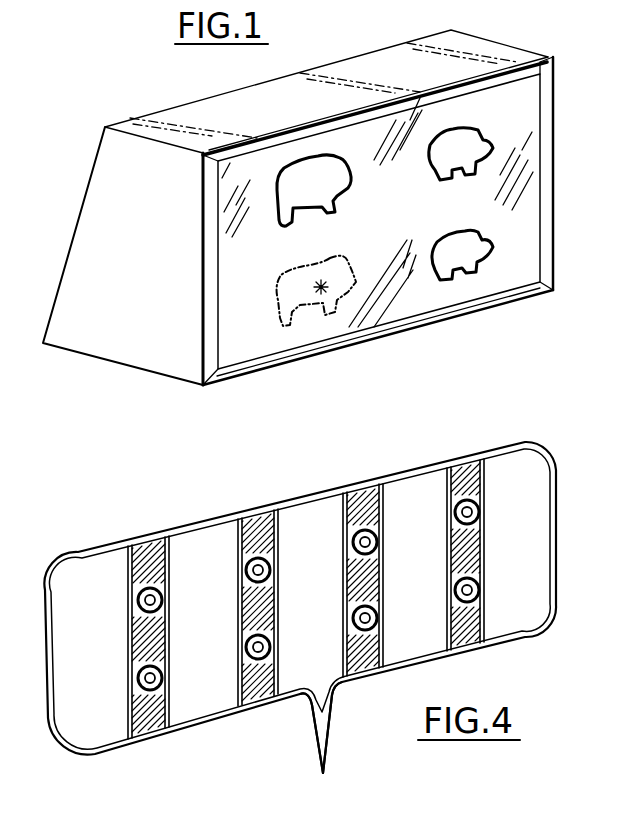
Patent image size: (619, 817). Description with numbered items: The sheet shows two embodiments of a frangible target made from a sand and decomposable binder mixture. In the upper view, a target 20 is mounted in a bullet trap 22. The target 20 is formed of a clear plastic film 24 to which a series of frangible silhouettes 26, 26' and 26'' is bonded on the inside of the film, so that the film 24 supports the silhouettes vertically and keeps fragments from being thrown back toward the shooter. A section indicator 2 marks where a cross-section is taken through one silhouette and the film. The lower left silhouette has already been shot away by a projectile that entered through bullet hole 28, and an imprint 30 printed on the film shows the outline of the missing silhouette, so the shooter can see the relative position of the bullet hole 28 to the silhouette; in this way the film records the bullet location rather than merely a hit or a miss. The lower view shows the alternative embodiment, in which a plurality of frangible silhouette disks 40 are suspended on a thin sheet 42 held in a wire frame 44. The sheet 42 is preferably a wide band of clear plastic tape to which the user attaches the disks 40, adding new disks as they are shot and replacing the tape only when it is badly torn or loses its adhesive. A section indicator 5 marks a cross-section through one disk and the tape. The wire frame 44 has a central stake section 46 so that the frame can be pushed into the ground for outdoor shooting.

In FIG. 1, the target 20 is at (522, 101).
In FIG. 1, the bullet trap 22 is at (480, 36).
In FIG. 1, the clear plastic film 24 is at (516, 277).
In FIG. 1, the frangible silhouette 26 is at (306, 161).
In FIG. 1, the frangible silhouette 26' is at (515, 141).
In FIG. 1, the frangible silhouette 26'' is at (519, 234).
In FIG. 1, the bullet hole 28 is at (320, 300).
In FIG. 1, the imprint 30 is at (280, 327).
In FIG. 1, the section line 2- 2 is at (307, 235).
In FIG. 4, the frangible silhouette disk 40 is at (161, 597).
In FIG. 4, the thin sheet 42 is at (471, 453).
In FIG. 4, the wire frame 44 is at (523, 640).
In FIG. 4, the central stake section 46 is at (316, 750).
In FIG. 4, the section line 5- 5 is at (152, 652).